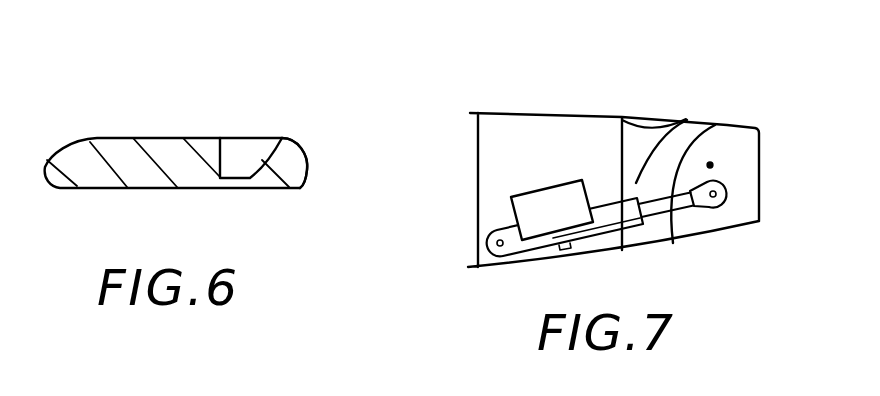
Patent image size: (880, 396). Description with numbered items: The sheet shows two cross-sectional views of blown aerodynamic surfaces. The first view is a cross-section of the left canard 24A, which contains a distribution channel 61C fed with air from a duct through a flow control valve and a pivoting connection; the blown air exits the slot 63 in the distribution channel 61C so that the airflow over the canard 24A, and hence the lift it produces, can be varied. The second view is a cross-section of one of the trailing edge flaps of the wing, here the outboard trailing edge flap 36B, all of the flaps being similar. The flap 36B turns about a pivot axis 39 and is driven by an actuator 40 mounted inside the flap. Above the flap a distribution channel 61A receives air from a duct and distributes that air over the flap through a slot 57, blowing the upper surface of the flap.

In FIG. 6, the left canard 24A is at (153, 138).
In FIG. 6, the distribution channel 61C is at (246, 157).
In FIG. 6, the slot 63 is at (287, 137).
In FIG. 7, the actuator 40 is at (535, 192).
In FIG. 7, the distribution channel 61A is at (643, 142).
In FIG. 7, the slot 57 is at (700, 122).
In FIG. 7, the pivot axis 39 is at (712, 165).
In FIG. 7, the outboard trailing edge flap 36B is at (760, 202).